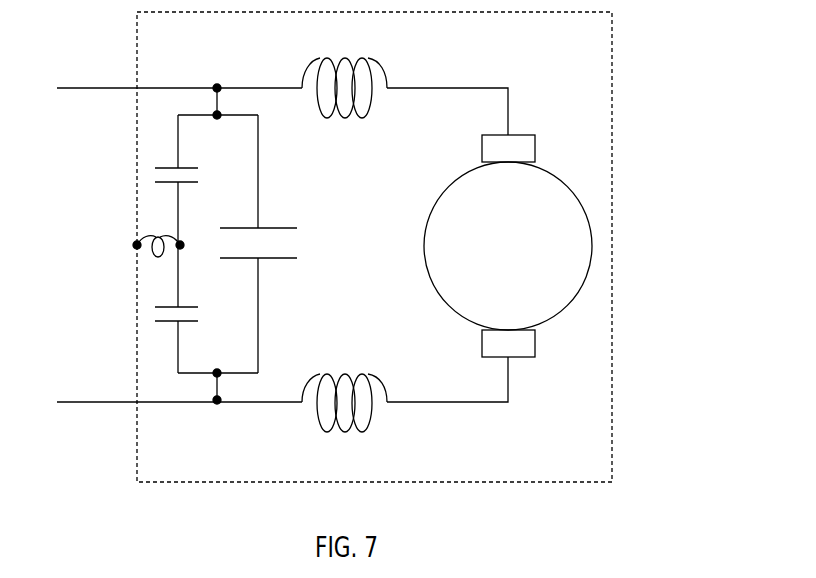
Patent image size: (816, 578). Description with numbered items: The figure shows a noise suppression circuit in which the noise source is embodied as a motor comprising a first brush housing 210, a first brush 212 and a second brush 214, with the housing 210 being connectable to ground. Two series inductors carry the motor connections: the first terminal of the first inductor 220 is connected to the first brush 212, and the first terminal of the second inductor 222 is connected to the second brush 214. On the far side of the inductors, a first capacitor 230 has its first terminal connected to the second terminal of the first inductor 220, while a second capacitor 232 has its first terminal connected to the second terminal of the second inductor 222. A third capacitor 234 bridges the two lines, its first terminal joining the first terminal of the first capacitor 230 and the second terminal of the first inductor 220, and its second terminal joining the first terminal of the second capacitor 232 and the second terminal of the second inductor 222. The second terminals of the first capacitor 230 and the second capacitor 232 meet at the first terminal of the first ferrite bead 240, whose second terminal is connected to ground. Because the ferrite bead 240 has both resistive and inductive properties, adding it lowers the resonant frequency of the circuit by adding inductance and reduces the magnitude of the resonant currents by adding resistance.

The first brush housing 210 is at (612, 42).
The first brush 212 is at (505, 142).
The second brush 214 is at (505, 338).
The first inductor 220 is at (352, 53).
The second inductor 222 is at (362, 418).
The first capacitor 230 is at (167, 167).
The second capacitor 232 is at (167, 307).
The third capacitor 234 is at (277, 228).
The first ferrite bead 240 is at (145, 236).